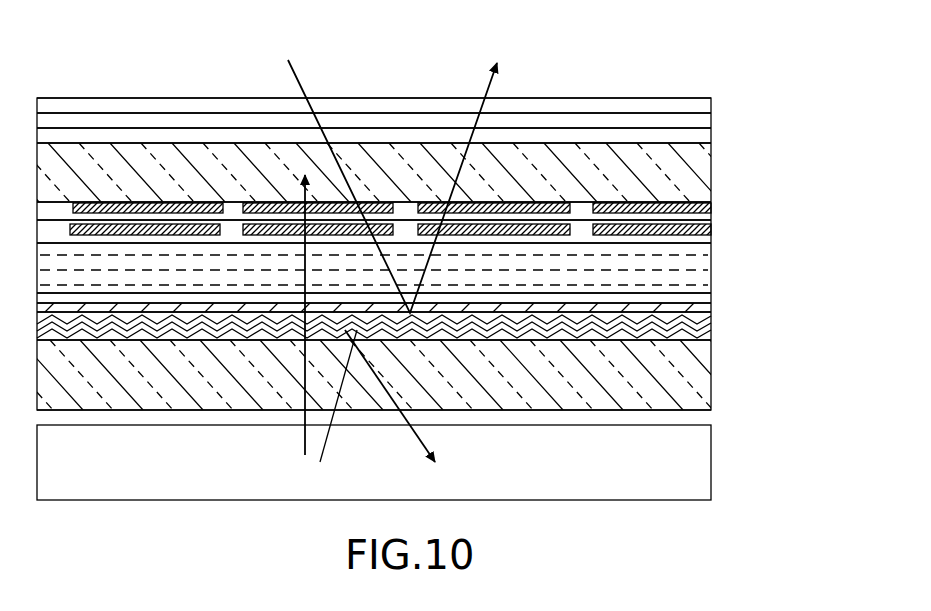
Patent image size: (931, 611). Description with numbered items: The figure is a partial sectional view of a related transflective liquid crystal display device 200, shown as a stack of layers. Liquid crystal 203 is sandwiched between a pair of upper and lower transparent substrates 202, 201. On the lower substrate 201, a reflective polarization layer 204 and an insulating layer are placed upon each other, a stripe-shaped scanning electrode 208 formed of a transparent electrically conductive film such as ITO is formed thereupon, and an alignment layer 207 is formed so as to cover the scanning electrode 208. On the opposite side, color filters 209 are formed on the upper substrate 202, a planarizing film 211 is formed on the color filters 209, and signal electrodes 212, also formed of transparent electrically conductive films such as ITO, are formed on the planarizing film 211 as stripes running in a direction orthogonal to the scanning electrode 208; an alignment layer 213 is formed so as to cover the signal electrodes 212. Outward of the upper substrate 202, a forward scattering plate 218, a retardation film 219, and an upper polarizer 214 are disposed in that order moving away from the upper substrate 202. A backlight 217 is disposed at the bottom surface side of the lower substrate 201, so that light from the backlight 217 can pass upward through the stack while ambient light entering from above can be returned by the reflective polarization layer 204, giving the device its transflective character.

The liquid crystal display device 200 is at (702, 85).
The lower transparent substrate 201 is at (692, 378).
The upper transparent substrate 202 is at (695, 180).
The liquid crystal 203 is at (690, 271).
The reflective polarization layer 204 is at (695, 338).
The alignment layer 207 is at (700, 300).
The scanning electrode 208 is at (700, 313).
The color filters 209 is at (615, 205).
The planarizing film 211 is at (700, 214).
The signal electrodes 212 is at (683, 228).
The alignment layer 213 is at (700, 240).
The upper polarizer 214 is at (700, 105).
The backlight 217 is at (692, 460).
The forward scattering plate 218 is at (700, 137).
The retardation film 219 is at (700, 120).